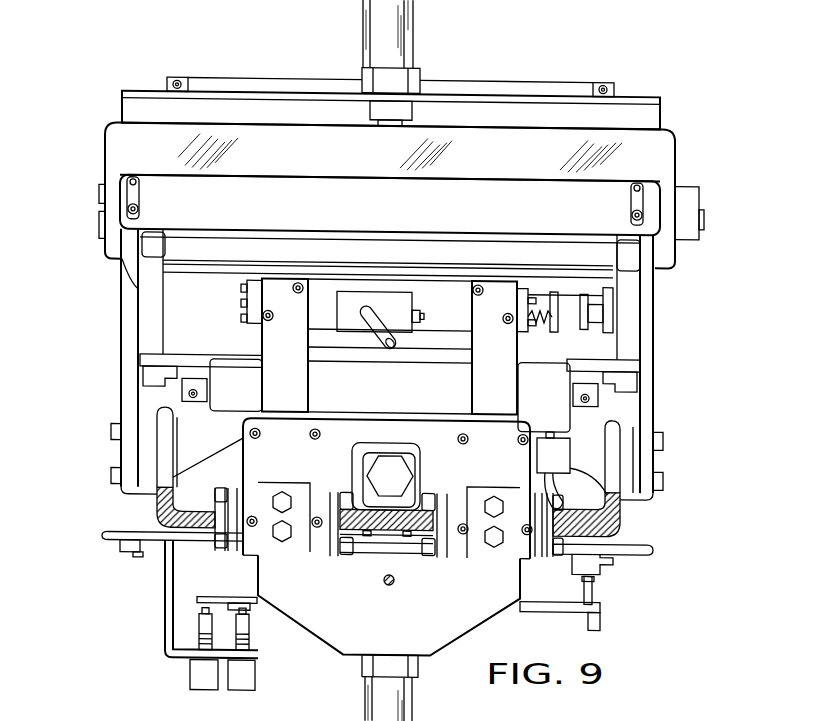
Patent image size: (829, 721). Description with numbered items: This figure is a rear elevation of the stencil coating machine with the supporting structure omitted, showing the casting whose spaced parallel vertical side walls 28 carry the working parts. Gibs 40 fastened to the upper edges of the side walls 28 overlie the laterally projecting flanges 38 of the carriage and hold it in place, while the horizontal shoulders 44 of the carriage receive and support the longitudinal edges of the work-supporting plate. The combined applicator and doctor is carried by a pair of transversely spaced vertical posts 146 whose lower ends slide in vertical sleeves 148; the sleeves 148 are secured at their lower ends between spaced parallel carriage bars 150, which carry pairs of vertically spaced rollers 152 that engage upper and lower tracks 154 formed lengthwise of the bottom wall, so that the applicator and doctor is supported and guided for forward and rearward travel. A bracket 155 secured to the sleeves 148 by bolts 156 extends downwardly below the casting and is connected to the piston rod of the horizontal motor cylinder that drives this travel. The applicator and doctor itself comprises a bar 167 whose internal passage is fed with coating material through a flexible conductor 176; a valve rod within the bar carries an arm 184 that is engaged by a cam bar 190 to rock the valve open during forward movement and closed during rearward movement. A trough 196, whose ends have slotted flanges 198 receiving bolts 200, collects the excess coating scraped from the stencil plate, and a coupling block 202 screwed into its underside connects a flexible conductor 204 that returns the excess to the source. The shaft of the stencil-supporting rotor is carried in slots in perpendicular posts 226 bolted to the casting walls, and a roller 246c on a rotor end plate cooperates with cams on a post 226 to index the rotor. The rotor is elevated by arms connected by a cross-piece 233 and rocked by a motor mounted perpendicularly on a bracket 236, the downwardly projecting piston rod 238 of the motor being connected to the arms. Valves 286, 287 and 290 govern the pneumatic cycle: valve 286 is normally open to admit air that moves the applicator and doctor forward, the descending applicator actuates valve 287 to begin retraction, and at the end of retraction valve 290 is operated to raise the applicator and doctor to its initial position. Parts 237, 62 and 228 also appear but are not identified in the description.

The drive shaft 237 is at (363, 18).
The piston rod 238 is at (391, 99).
The bracket 236 is at (460, 95).
The cross-piece 233 is at (338, 163).
The head assembly 62 is at (585, 38).
The posts 226 is at (132, 323).
The roller 246c is at (150, 261).
The gibs 40 is at (157, 365).
The flanges 38 is at (170, 380).
The shoulders 44 is at (200, 379).
The bolts 200 is at (590, 400).
The slotted flanges 198 is at (578, 416).
The posts 146 is at (300, 387).
The trough 196 is at (385, 394).
The flexible conductor 176 is at (362, 310).
The bar 167 is at (447, 327).
The cam bar 190 is at (578, 290).
The arm 184 is at (551, 318).
The sleeves 148 is at (291, 454).
The bolts 156 is at (282, 541).
The carriage bars 150 is at (235, 547).
The rollers 152 is at (347, 494).
The tracks 154 is at (160, 515).
The side walls 28 is at (168, 438).
The bolts 228 is at (663, 474).
The coupling block 202 is at (572, 466).
The flexible conductor 204 is at (560, 490).
The bracket 155 is at (338, 624).
The valve 287 is at (203, 630).
The valve 290 is at (247, 637).
The valve 286 is at (597, 589).